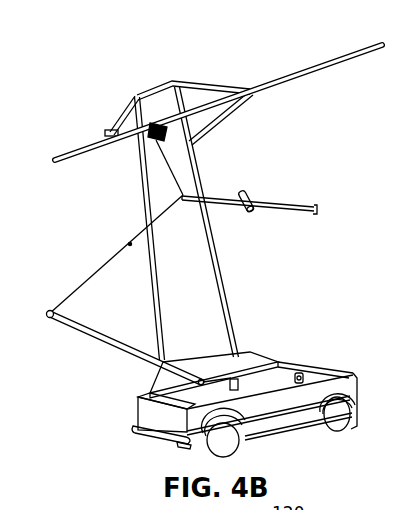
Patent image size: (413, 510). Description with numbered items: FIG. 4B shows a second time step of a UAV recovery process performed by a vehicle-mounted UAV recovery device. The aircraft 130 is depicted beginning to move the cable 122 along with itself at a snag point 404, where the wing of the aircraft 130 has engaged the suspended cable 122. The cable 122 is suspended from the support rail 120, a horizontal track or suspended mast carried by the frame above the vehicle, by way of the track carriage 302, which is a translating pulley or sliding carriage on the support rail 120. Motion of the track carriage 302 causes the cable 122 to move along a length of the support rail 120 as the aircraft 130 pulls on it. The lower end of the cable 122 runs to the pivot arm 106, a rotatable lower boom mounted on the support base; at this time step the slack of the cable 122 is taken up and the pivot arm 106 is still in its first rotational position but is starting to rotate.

The support rail 120 is at (288, 73).
The track carriage 302 is at (148, 121).
The snag point 404 is at (184, 203).
The cable 122 is at (112, 257).
The aircraft 130 is at (276, 192).
The pivot arm 106 is at (125, 352).